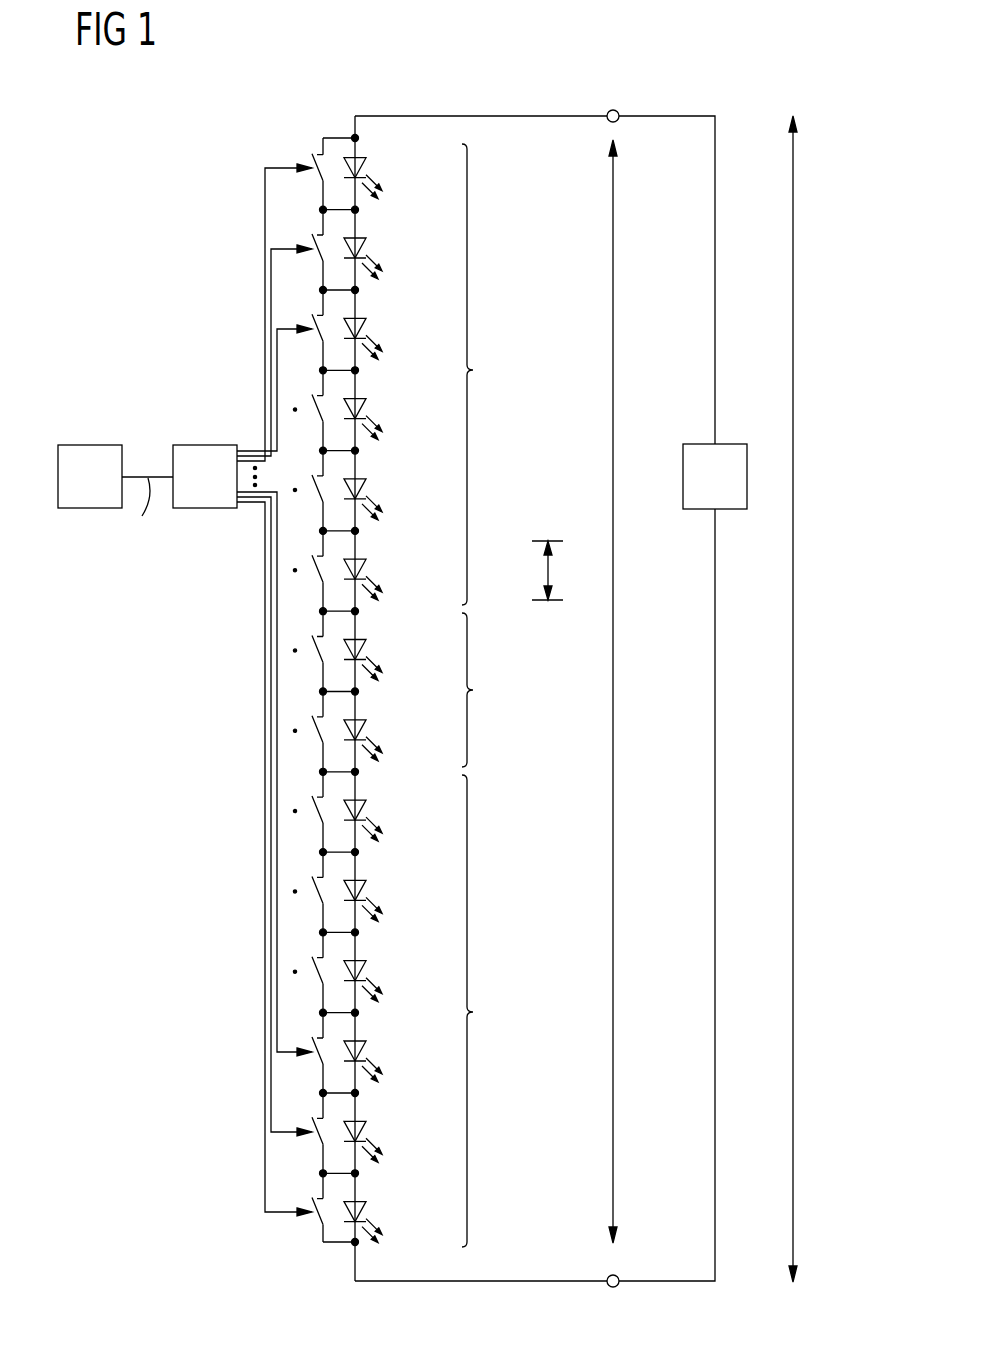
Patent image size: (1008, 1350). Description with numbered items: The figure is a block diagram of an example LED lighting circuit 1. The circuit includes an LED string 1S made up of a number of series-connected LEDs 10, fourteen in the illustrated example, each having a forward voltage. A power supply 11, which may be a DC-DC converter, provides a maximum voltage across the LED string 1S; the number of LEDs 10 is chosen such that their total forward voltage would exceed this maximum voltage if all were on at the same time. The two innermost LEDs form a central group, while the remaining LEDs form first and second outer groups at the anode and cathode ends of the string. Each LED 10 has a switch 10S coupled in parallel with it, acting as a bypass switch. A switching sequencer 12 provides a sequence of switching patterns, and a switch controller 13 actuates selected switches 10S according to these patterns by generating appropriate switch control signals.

The LED lighting circuit 1 is at (197, 710).
The LED string 1S is at (301, 110).
The LED 10 is at (368, 158).
The switch 10S is at (312, 156).
The power supply 11 is at (732, 444).
The switching sequencer 12 is at (90, 445).
The switch controller 13 is at (203, 445).